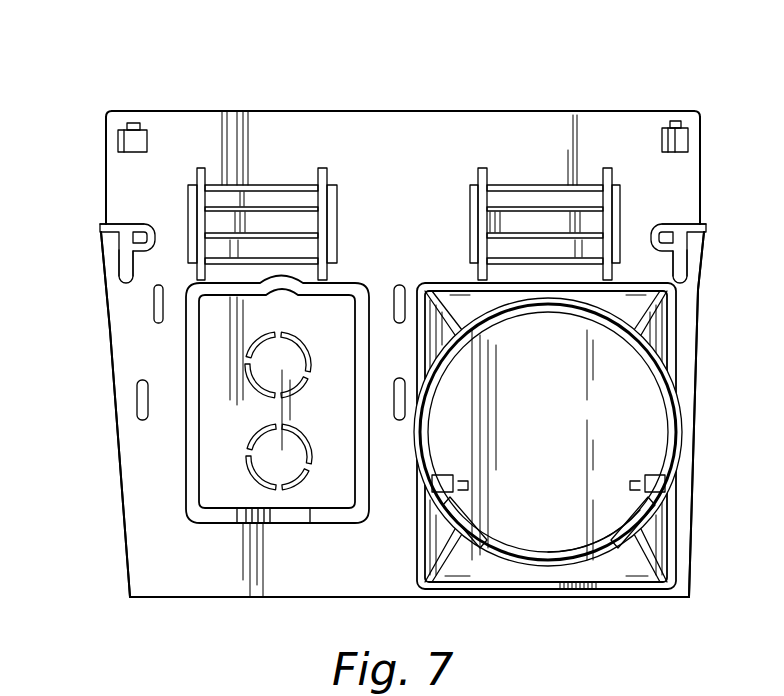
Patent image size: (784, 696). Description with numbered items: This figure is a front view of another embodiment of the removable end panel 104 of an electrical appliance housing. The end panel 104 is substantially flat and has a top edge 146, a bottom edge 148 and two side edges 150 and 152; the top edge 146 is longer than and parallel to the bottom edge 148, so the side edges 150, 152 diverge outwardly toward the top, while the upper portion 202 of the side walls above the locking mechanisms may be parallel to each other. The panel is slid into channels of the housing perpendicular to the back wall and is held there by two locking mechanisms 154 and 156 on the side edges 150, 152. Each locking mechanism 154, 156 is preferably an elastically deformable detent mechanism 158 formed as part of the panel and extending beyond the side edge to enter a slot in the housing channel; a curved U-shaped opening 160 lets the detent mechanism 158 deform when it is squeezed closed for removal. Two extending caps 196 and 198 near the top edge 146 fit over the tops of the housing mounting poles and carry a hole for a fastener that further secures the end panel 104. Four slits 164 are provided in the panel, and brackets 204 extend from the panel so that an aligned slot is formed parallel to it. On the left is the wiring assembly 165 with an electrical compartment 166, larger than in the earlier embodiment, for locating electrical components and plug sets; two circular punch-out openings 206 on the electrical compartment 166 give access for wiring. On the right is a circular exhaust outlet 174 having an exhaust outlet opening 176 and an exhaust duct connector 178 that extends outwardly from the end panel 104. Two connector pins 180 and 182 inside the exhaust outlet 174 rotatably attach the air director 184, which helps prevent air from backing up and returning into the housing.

The end panel 104 is at (530, 106).
The top edge 146 is at (403, 111).
The bottom edge 148 is at (398, 600).
The side edge 150 is at (108, 332).
The side edge 152 is at (700, 325).
The locking mechanism 154 is at (93, 230).
The locking mechanism 156 is at (712, 235).
The detent mechanism 158 is at (113, 236).
The opening 160 is at (120, 222).
The slits 164 is at (138, 398).
The wiring assembly 165 is at (182, 506).
The electrical compartment 166 is at (218, 523).
The exhaust outlet 174 is at (691, 452).
The exhaust outlet opening 176 is at (668, 426).
The exhaust duct connector 178 is at (658, 520).
The connector pin 180 is at (628, 548).
The connector pin 182 is at (488, 553).
The air director 184 is at (636, 405).
The cap 196 is at (118, 134).
The cap 198 is at (688, 137).
The upper portion 202 is at (106, 178).
The brackets 204 is at (271, 240).
The punch-out openings 206 is at (267, 443).